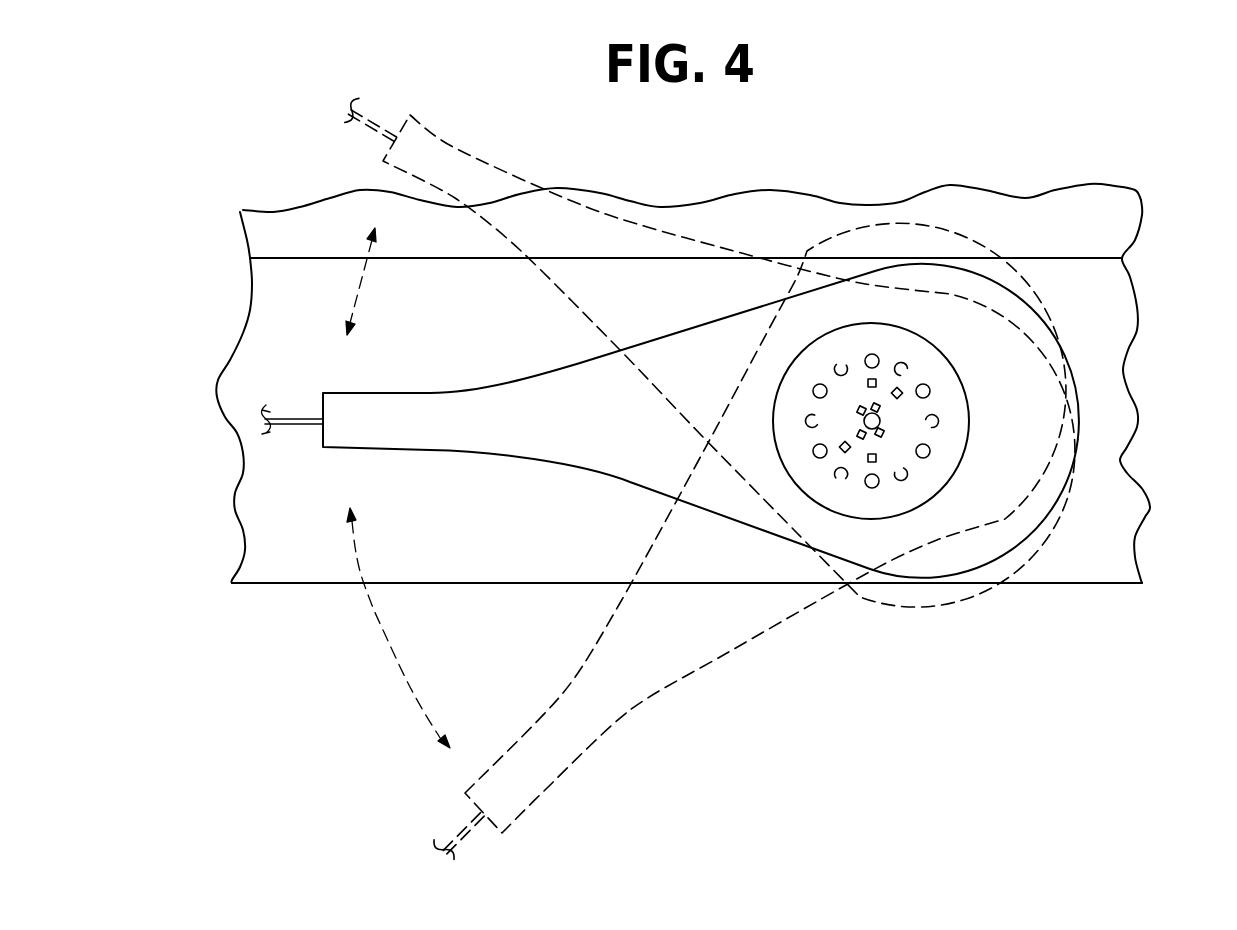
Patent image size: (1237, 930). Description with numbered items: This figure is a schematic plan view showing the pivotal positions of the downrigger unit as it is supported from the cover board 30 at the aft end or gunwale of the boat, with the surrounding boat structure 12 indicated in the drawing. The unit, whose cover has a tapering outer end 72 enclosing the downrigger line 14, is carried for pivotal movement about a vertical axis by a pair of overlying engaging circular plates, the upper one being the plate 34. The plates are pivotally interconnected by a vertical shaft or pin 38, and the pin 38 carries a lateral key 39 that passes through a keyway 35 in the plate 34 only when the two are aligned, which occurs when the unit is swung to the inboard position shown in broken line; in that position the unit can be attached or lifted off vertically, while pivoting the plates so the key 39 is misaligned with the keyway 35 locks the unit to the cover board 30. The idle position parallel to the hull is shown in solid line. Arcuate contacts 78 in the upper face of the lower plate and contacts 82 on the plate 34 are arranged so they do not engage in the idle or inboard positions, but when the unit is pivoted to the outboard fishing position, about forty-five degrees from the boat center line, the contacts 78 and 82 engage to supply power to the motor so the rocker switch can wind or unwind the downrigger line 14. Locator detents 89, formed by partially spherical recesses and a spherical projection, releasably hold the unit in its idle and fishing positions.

The blood vessel 12 is at (293, 590).
The downrigger line 14 is at (298, 414).
The cover board 30 is at (1115, 510).
The circular plate 34 is at (917, 500).
The keyway 35 is at (863, 438).
The vertical shaft or pin 38 is at (880, 419).
The lateral key 39 is at (884, 433).
The tapering outer end 72 is at (380, 440).
The arcuate contacts 78 is at (900, 389).
The contacts 82 is at (874, 377).
The locator detents 89 is at (871, 352).